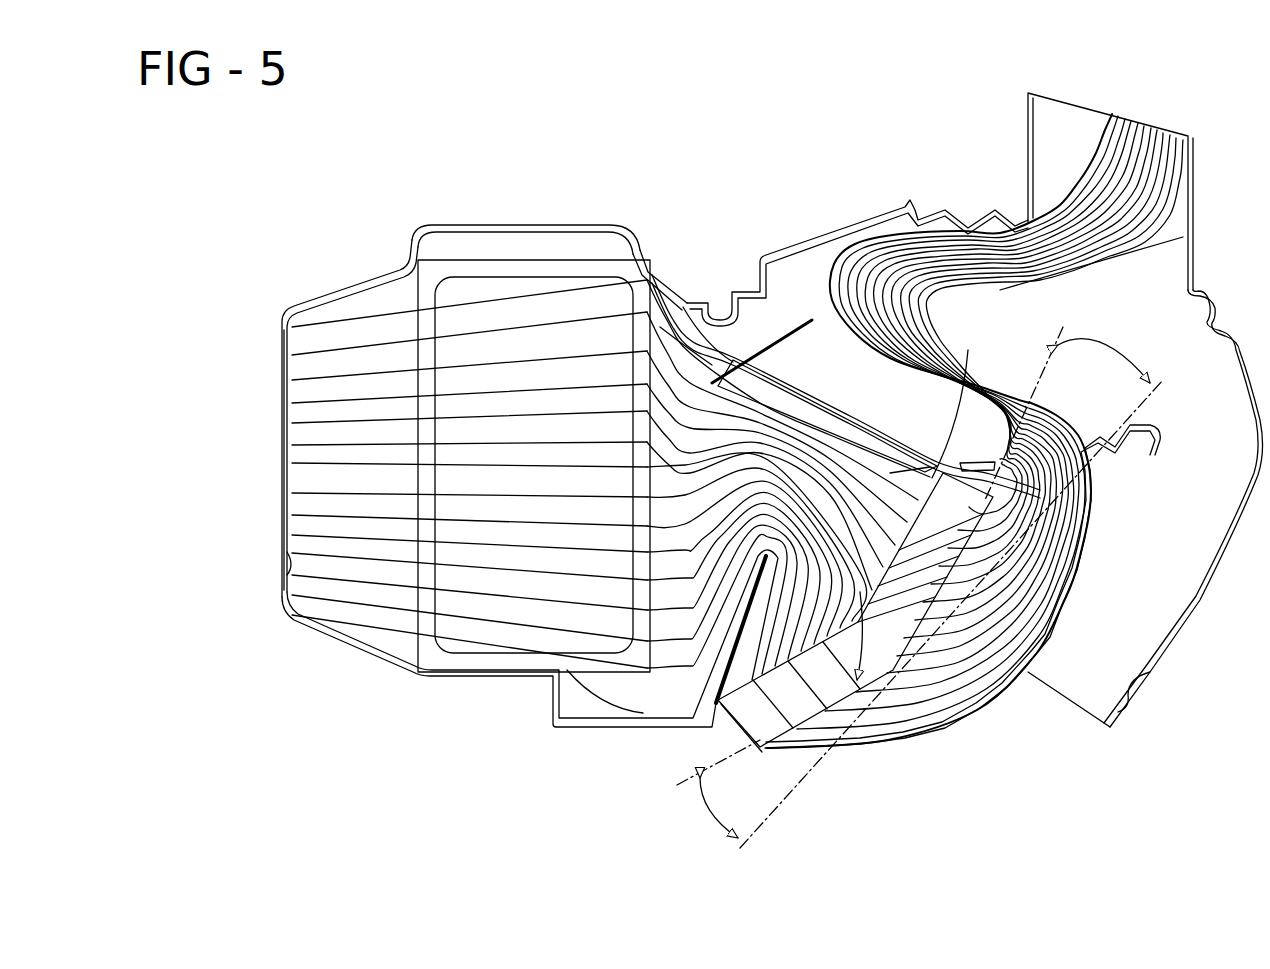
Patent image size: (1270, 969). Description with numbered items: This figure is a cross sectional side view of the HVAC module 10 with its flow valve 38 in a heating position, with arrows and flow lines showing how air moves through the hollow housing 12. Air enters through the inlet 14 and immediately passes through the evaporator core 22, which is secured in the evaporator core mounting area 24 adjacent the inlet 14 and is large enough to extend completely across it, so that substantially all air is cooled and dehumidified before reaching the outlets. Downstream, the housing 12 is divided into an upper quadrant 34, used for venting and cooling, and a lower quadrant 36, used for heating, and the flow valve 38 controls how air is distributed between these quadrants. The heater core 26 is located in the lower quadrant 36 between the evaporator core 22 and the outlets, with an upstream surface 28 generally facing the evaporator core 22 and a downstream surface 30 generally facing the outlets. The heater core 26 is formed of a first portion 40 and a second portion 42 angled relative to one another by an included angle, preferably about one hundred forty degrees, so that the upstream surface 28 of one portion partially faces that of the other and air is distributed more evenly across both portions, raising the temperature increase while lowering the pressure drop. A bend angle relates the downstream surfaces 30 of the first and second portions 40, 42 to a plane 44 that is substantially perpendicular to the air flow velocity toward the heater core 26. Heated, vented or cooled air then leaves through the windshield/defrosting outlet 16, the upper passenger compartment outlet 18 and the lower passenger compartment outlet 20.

The HVAC module 10 is at (650, 532).
The housing 12 is at (350, 288).
The inlet 14 is at (288, 565).
The windshield/defrosting outlet 16 is at (775, 256).
The upper passenger compartment outlet 18 is at (1033, 130).
The lower passenger compartment outlet 20 is at (1132, 700).
The evaporator core 22 is at (470, 310).
The evaporator core mounting area 24 is at (588, 228).
The heater core 26 is at (743, 715).
The upstream surface 28 is at (772, 655).
The downstream surface 30 is at (956, 568).
The upper quadrant 34 is at (682, 356).
The lower quadrant 36 is at (652, 683).
The flow valve 38 is at (830, 413).
The first portion 40 is at (950, 398).
The second portion 42 is at (840, 740).
The plane 44 is at (790, 792).